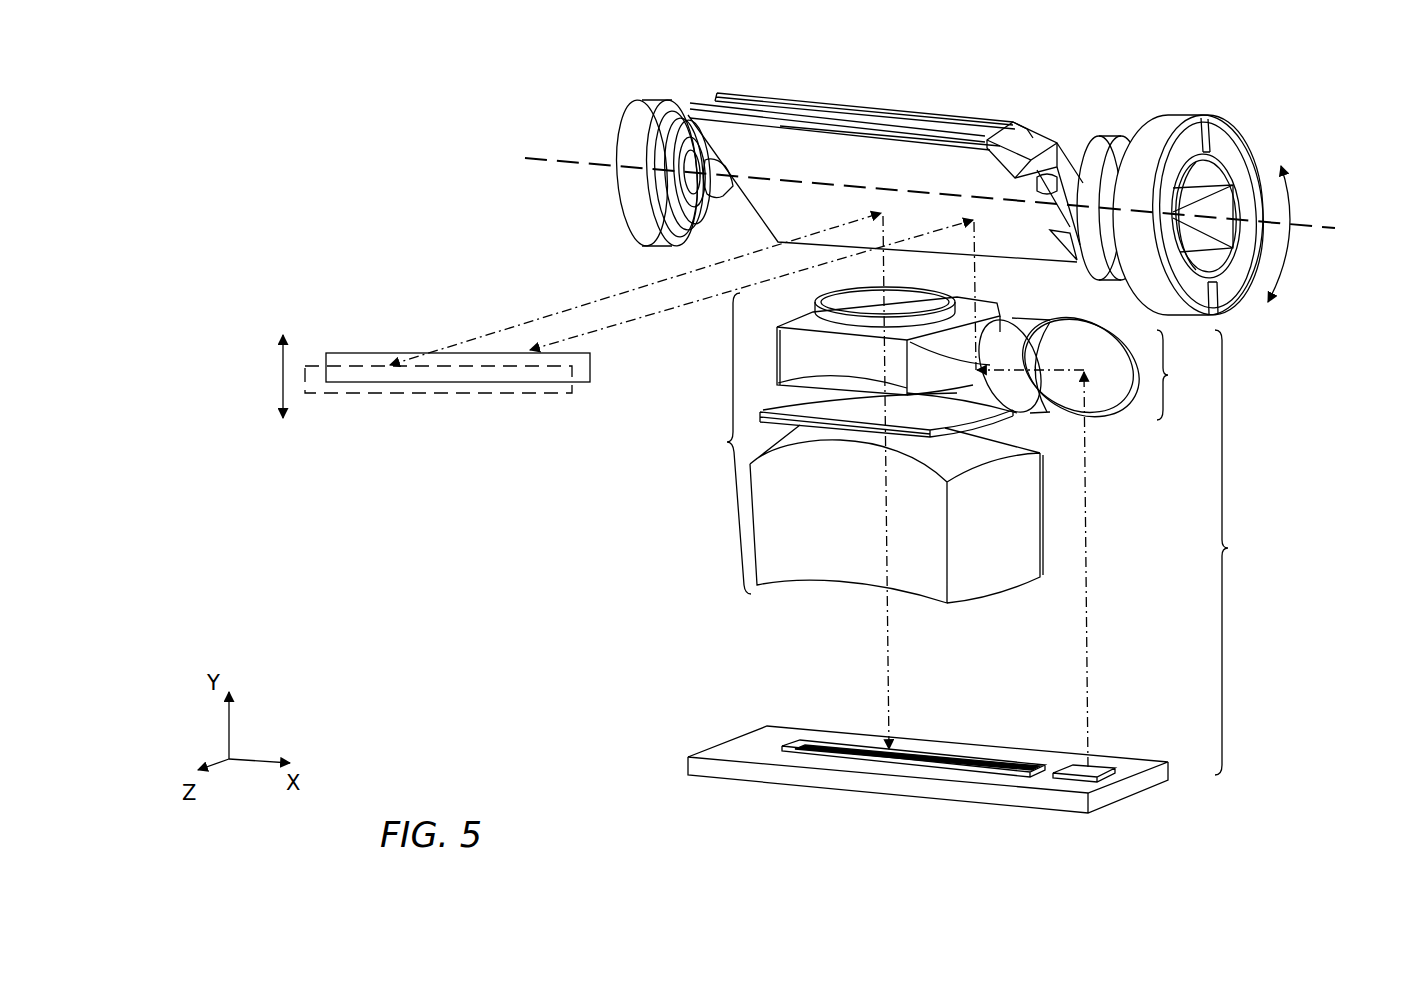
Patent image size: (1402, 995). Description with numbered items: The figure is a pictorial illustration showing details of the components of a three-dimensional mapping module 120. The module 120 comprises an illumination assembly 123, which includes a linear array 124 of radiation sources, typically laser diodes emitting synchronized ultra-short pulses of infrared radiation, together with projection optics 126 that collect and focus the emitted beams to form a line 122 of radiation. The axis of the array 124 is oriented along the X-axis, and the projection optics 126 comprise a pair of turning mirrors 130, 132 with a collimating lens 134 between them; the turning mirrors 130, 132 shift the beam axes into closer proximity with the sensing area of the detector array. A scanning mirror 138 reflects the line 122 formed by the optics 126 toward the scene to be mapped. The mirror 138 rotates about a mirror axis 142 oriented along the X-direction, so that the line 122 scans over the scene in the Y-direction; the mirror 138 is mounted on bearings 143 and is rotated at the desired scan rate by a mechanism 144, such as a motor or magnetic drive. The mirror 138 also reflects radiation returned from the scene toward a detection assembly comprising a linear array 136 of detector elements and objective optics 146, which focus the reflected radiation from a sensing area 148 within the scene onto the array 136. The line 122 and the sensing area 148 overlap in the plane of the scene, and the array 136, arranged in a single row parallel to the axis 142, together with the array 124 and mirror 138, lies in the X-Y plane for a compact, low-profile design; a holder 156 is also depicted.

The 3D mapping module 120 is at (392, 100).
The line of radiation 122 is at (352, 353).
The sensing area 148 is at (327, 396).
The bearings 143 is at (661, 98).
The scanning mirror 138 is at (743, 117).
The holder 156 is at (895, 143).
The mechanism 144 is at (1192, 114).
The mirror axis 142 is at (1323, 223).
The objective optics 146 is at (865, 445).
The collimating lens 134 is at (1023, 324).
The turning mirror 130 is at (1113, 405).
The projection optics 126 is at (1091, 373).
The turning mirror 132 is at (970, 380).
The illumination assembly 123 is at (981, 571).
The array of detector elements 136 is at (808, 744).
The linear array of radiation sources 124 is at (1104, 758).